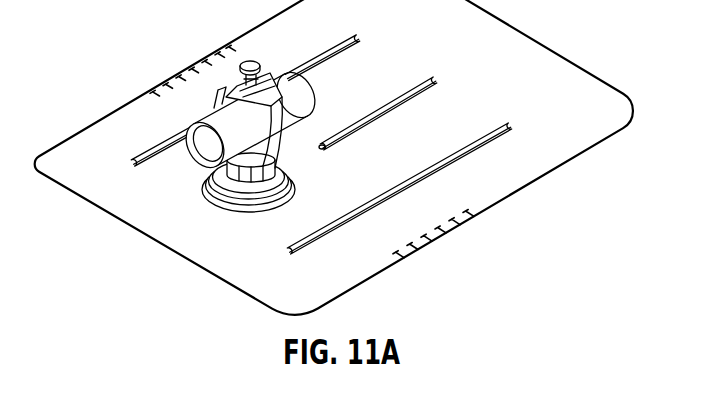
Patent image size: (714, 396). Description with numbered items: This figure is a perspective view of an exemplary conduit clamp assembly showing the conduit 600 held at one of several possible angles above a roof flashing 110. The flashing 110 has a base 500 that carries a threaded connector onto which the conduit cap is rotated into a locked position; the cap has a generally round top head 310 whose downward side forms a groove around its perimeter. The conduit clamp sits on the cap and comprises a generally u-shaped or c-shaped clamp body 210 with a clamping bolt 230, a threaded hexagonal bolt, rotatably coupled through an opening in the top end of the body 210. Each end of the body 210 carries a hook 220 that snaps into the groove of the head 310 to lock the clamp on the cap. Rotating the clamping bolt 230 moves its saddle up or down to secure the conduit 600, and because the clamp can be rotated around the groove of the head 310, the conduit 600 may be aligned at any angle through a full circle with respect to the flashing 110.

The flashing 110 is at (589, 86).
The clamp body 210 is at (327, 147).
The hook 220 is at (287, 170).
The clamping bolt 230 is at (250, 59).
The top head 310 is at (214, 190).
The base 500 is at (246, 207).
The conduit 600 is at (290, 81).